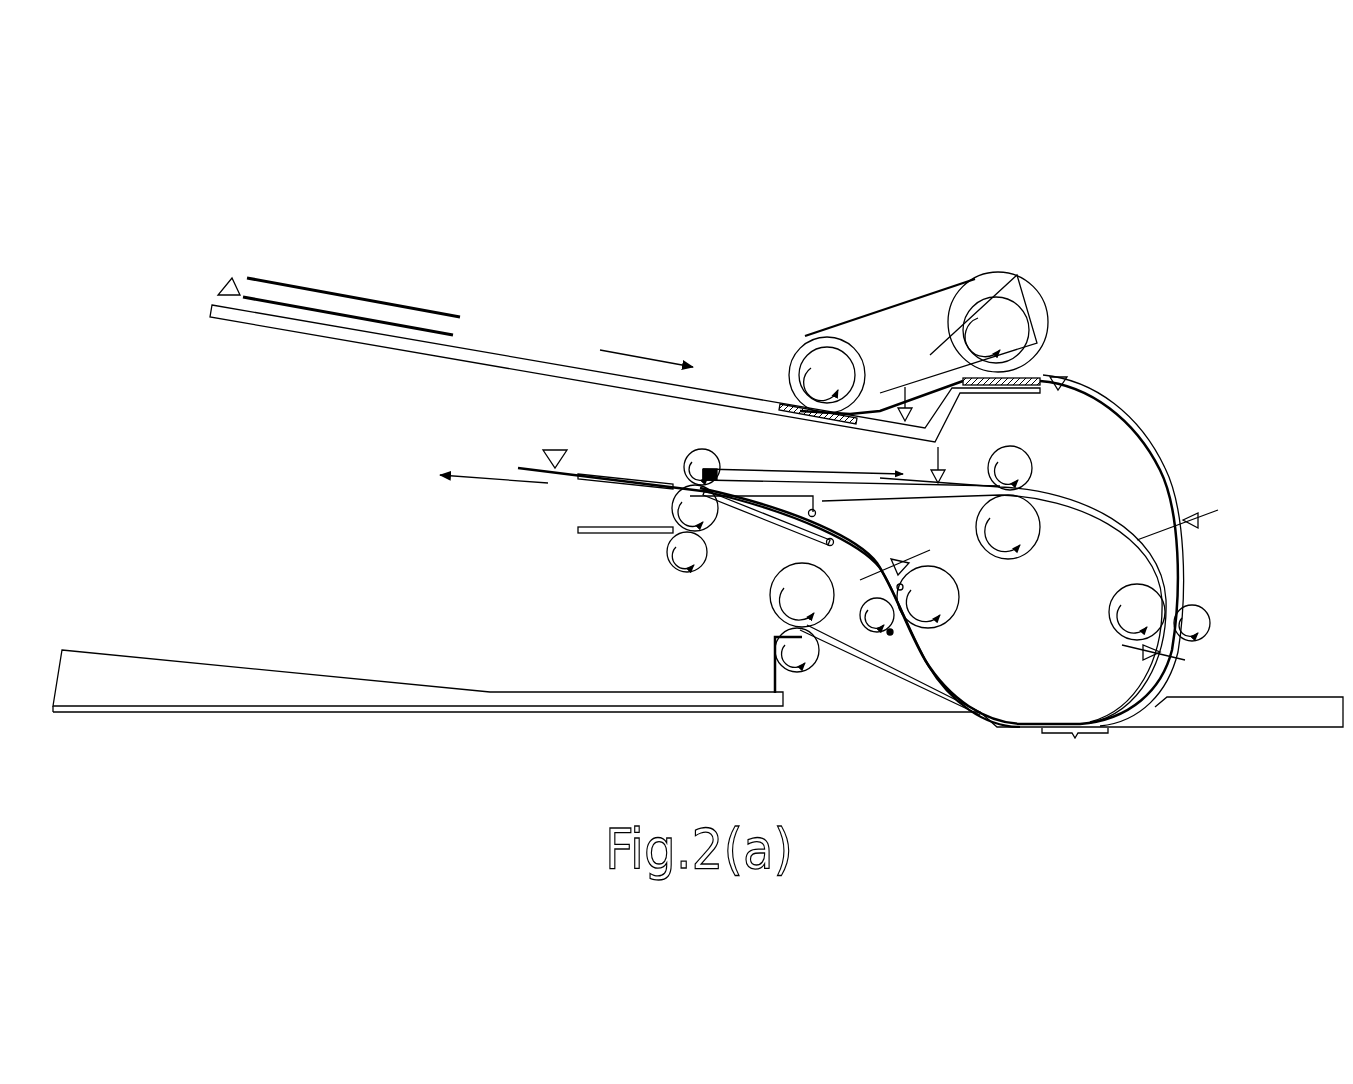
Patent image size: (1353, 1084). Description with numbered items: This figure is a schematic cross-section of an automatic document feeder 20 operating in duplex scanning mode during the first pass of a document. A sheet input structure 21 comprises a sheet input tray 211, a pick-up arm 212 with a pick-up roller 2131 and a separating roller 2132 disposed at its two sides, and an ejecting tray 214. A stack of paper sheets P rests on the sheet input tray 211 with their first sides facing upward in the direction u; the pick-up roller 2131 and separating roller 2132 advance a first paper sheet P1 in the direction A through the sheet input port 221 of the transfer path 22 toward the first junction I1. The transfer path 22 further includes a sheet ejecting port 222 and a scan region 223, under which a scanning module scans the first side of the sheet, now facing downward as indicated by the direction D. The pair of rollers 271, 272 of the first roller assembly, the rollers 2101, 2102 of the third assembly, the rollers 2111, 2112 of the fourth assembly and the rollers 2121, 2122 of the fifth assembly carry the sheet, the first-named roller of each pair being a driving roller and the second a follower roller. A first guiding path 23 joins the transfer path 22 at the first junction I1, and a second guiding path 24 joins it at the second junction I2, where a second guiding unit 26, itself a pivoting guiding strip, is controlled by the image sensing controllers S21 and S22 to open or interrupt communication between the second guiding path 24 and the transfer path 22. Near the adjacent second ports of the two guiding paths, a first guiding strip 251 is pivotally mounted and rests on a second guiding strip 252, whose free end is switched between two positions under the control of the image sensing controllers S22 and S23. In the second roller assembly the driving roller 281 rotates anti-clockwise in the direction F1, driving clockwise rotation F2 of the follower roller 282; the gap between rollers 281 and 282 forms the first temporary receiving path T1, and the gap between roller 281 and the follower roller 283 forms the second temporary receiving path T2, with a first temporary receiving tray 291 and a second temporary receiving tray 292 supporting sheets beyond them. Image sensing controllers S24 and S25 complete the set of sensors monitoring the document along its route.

The automatic document feeder 20 is at (1264, 185).
The sheet input structure 21 is at (550, 278).
The sheet input tray 211 is at (335, 332).
The pick-up arm 212 is at (910, 313).
The pick-up roller 2131 is at (793, 373).
The separating roller 2132 is at (1020, 327).
The ejecting tray 214 is at (453, 692).
The transfer path 22 is at (1140, 424).
The sheet input port 221 is at (1062, 380).
The sheet ejecting port 222 is at (780, 624).
The scan region 223 is at (1075, 742).
The first guiding path 23 is at (1108, 492).
The second guiding path 24 is at (907, 580).
The first guiding strip 251 is at (773, 502).
The second guiding strip 252 is at (762, 518).
The second guiding unit 26 is at (893, 677).
The driving roller of third roller assembly 2101 is at (1028, 537).
The follower roller of third roller assembly 2102 is at (1030, 462).
The driving roller of fourth roller assembly 2111 is at (780, 622).
The follower roller of fourth roller assembly 2112 is at (790, 667).
The driving roller of fifth roller assembly 2121 is at (962, 605).
The follower roller of fifth roller assembly 2122 is at (866, 630).
The driving roller of first roller assembly 271 is at (1110, 615).
The follower roller of first roller assembly 272 is at (1198, 610).
The driving roller 281 is at (678, 482).
The follower roller 282 is at (690, 450).
The follower roller 283 is at (673, 547).
The first temporary receiving tray 291 is at (578, 480).
The second temporary receiving tray 292 is at (610, 530).
The paper sheets P is at (320, 287).
The first paper sheet P1 is at (990, 273).
The direction U u is at (231, 277).
The direction A is at (637, 348).
The direction D is at (553, 450).
The anti-clockwise rotation direction of driving roller F1 is at (673, 503).
The clockwise rotation direction of follower roller F2 is at (708, 448).
The first temporary receiving path T1 is at (722, 478).
The second temporary receiving path T2 is at (712, 560).
The image sensing controller S21 is at (1143, 655).
The image sensing controller S22 is at (898, 560).
The image sensing controller S23 is at (940, 447).
The image sensing controller S24 is at (902, 405).
The image sensing controller S25 is at (1193, 518).
The first junction I1 is at (1175, 558).
The second junction I2 is at (978, 717).